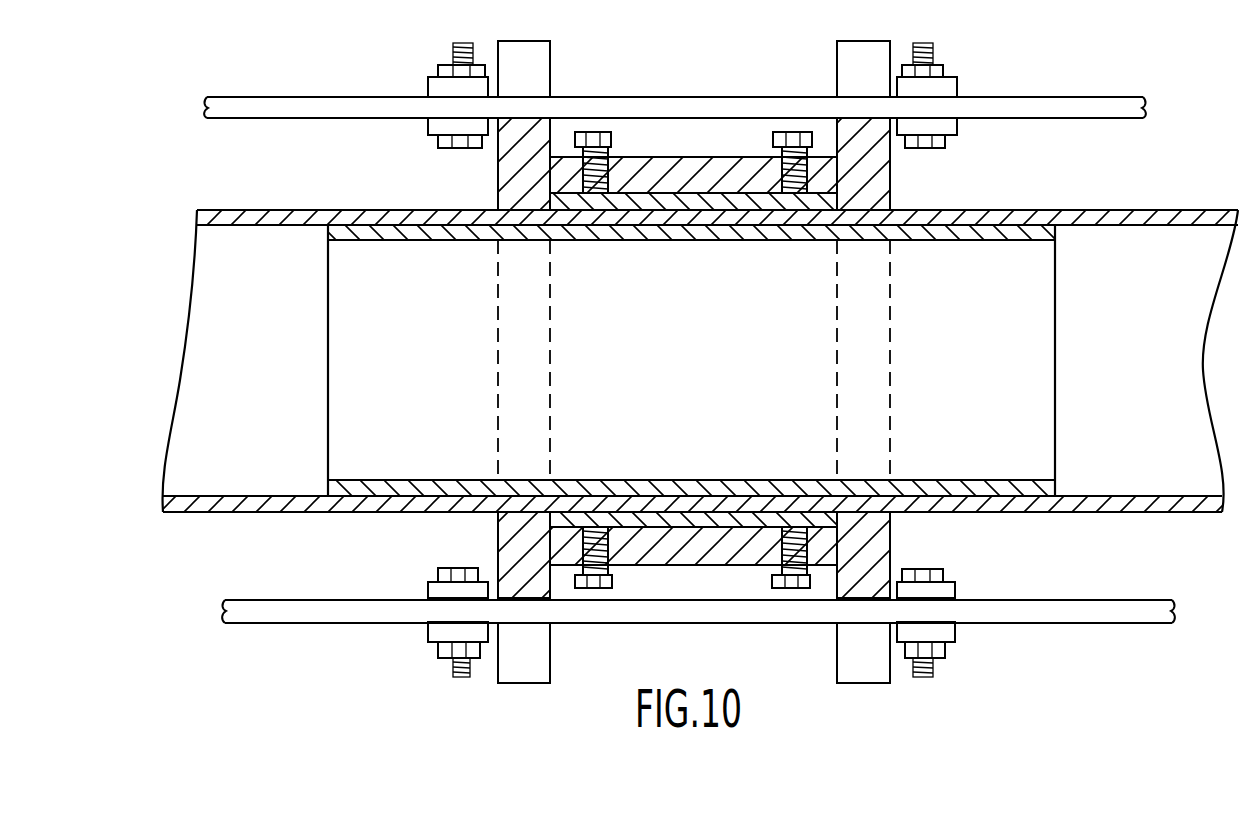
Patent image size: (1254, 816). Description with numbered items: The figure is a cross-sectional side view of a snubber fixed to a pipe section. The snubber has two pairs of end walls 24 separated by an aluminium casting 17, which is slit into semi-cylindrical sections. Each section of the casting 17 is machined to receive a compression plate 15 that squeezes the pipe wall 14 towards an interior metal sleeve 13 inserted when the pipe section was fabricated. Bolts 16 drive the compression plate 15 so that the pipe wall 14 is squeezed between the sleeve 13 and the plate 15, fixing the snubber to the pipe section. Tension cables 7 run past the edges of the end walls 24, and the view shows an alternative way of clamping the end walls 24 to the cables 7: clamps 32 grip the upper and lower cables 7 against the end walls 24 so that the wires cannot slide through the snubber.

The tension cable 7 is at (1093, 110).
The interior metal sleeve 13 is at (950, 232).
The pipe wall 14 is at (1090, 228).
The compression plate 15 is at (818, 207).
The bolt 16 is at (612, 140).
The aluminium casting 17 is at (683, 165).
The end wall 24 is at (545, 63).
The clamp 32 is at (432, 80).